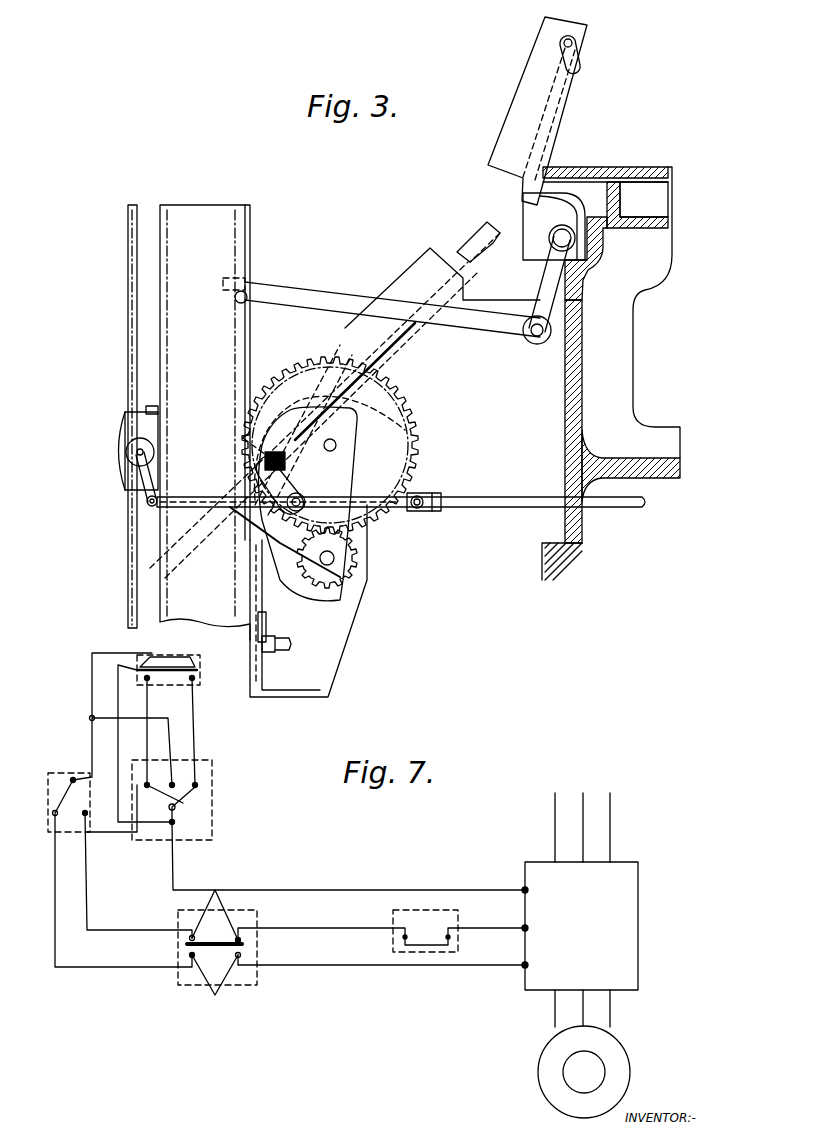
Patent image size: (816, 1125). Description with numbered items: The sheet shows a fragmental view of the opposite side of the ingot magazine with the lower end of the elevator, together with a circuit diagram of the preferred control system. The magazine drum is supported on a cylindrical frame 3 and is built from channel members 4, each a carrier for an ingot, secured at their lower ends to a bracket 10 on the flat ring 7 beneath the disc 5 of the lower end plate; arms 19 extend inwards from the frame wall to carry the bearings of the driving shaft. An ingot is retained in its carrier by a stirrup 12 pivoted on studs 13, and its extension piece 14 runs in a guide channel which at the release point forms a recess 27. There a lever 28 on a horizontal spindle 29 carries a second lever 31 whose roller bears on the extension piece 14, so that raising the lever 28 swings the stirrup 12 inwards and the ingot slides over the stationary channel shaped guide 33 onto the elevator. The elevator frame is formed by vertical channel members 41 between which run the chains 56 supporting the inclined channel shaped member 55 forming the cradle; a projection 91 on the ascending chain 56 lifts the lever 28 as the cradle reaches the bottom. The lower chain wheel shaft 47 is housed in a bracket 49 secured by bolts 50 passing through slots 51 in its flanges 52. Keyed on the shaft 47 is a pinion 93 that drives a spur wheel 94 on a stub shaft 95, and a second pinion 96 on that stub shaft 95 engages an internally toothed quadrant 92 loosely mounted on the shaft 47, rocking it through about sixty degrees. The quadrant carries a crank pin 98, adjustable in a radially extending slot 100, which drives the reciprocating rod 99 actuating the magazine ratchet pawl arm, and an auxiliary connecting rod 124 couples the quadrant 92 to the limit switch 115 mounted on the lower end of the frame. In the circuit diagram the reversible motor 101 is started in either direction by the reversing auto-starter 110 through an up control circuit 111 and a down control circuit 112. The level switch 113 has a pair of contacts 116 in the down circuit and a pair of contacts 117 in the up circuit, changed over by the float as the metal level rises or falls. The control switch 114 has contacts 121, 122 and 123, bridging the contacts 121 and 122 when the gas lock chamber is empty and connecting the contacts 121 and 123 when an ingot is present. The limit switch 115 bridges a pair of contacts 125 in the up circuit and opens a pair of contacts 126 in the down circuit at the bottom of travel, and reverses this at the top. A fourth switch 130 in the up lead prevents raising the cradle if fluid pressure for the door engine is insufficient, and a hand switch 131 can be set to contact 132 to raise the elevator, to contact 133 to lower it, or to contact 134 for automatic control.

In FIG. 3, the cylindrical frame 3 is at (563, 393).
In FIG. 3, the channel member 4 is at (530, 73).
In FIG. 3, the disc 5 is at (630, 167).
In FIG. 3, the flat ring 7 is at (585, 167).
In FIG. 3, the bracket 10 is at (555, 133).
In FIG. 3, the stirrup 12 is at (566, 92).
In FIG. 3, the stud 13 is at (573, 47).
In FIG. 3, the extension piece 14 is at (576, 240).
In FIG. 3, the arm 19 is at (614, 212).
In FIG. 3, the recess 27 is at (592, 255).
In FIG. 3, the lever 28 is at (312, 300).
In FIG. 3, the horizontal spindle 29 is at (530, 338).
In FIG. 3, the second lever 31 is at (550, 306).
In FIG. 3, the channel shaped guide 33 is at (470, 247).
In FIG. 3, the channel member 41 is at (185, 232).
In FIG. 3, the chain 56 is at (237, 250).
In FIG. 3, the projection 91 is at (244, 294).
In FIG. 3, the internally toothed quadrant 92 is at (405, 430).
In FIG. 3, the pinion 93 is at (343, 578).
In FIG. 3, the spur wheel 94 is at (405, 458).
In FIG. 3, the stub shaft 95 is at (392, 388).
In FIG. 3, the second pinion 96 is at (296, 514).
In FIG. 3, the pin 98 is at (250, 537).
In FIG. 3, the reciprocating rod 99 is at (488, 498).
In FIG. 3, the radially extending slot 100 is at (243, 438).
In FIG. 3, the shaft 47 is at (334, 556).
In FIG. 3, the bracket 49 is at (368, 557).
In FIG. 3, the bolt 50 is at (275, 643).
In FIG. 3, the slot 51 is at (268, 614).
In FIG. 3, the flange 52 is at (257, 586).
In FIG. 3, the channel shaped member 55 is at (415, 285).
In FIG. 3, the limit switch 115 is at (132, 422).
In FIG. 7, the limit switch 115 is at (252, 985).
In FIG. 3, the auxiliary connecting rod 124 is at (150, 506).
In FIG. 7, the reversible motor 101 is at (538, 1072).
In FIG. 7, the reversing auto-starter 110 is at (581, 910).
In FIG. 7, the up control circuit 111 is at (481, 927).
In FIG. 7, the down control circuit 112 is at (320, 963).
In FIG. 7, the level switch 113 is at (118, 666).
In FIG. 7, the control switch 114 is at (60, 772).
In FIG. 7, the pair of contacts 116 is at (150, 660).
In FIG. 7, the pair of contacts 117 is at (191, 680).
In FIG. 7, the contact 121 is at (70, 780).
In FIG. 7, the contact 122 is at (87, 820).
In FIG. 7, the contact 123 is at (55, 813).
In FIG. 7, the pair of contacts 125 is at (214, 902).
In FIG. 7, the pair of contacts 126 is at (215, 985).
In FIG. 7, the fourth switch 130 is at (398, 910).
In FIG. 7, the hand switch 131 is at (212, 782).
In FIG. 7, the contact 132 is at (175, 822).
In FIG. 7, the contact 133 is at (175, 783).
In FIG. 7, the contact 134 is at (197, 788).